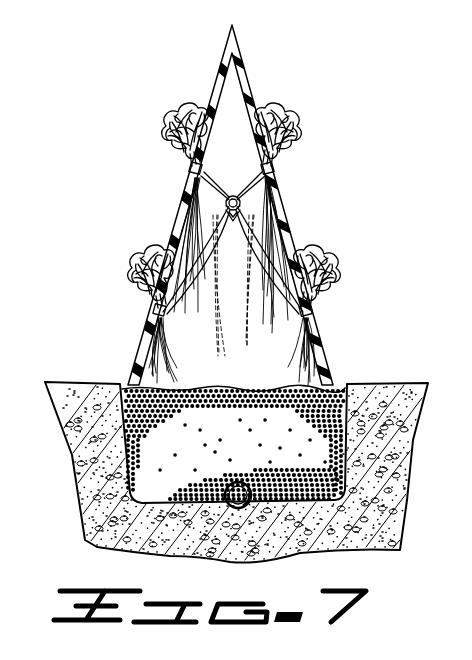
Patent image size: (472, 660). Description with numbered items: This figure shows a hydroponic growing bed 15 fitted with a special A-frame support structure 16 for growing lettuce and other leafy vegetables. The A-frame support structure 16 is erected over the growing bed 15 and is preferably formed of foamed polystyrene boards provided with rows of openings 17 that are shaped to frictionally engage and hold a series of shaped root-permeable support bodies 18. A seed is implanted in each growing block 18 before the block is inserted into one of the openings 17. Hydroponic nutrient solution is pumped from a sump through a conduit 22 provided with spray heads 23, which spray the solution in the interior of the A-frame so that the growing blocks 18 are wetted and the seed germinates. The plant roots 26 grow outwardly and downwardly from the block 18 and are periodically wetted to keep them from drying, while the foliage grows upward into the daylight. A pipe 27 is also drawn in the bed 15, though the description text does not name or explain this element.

The hydroponic growing bed 15 is at (342, 426).
The A-frame support structure 16 is at (252, 90).
The openings 17 is at (190, 168).
The shaped root-permeable support body 18 is at (203, 164).
The conduit 22 is at (233, 195).
The spray heads 23 is at (233, 221).
The plant roots 26 is at (247, 246).
The drain pipe 27 is at (240, 481).